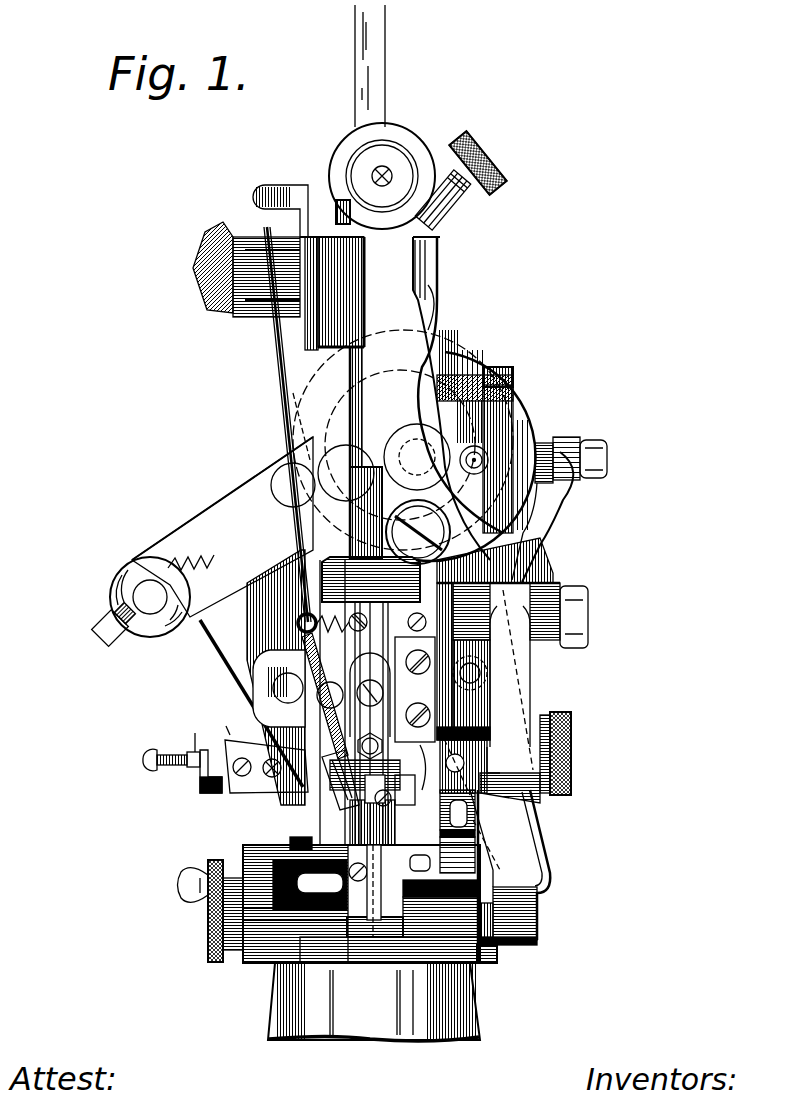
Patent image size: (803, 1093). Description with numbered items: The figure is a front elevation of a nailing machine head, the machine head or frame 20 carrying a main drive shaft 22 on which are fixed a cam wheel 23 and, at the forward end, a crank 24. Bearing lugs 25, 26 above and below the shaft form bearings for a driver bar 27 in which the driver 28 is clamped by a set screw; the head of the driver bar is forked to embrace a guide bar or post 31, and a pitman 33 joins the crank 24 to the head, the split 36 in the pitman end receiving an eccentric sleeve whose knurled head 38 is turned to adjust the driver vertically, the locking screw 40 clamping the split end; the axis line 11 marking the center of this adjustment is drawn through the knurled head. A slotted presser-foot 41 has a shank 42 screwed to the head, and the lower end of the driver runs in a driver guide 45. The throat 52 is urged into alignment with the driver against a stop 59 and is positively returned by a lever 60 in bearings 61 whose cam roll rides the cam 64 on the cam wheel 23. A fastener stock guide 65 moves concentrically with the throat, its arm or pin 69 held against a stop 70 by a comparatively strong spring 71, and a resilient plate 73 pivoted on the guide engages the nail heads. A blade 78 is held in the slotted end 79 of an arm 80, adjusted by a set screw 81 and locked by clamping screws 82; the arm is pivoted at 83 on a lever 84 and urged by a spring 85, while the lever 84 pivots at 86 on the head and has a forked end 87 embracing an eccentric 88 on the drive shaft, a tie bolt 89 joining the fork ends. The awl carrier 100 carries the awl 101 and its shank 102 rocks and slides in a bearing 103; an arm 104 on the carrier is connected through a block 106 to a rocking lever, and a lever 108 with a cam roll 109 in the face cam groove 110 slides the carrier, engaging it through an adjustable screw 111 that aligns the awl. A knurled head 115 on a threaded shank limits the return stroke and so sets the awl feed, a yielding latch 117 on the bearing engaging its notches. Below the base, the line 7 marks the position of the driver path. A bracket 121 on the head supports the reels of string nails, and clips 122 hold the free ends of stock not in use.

The needle 7 is at (372, 940).
The axis of hand wheel 11 is at (462, 252).
The machine head or frame 20 is at (437, 312).
The main drive shaft 22 is at (490, 440).
The cam wheel 23 is at (457, 352).
The crank 24 is at (553, 440).
The bearing lug 25 is at (428, 292).
The bearing lug 26 is at (517, 567).
The driver bar 27 is at (293, 503).
The driver 28 is at (440, 852).
The guide bar or post 31 is at (372, 77).
The pitman 33 is at (318, 373).
The split of pitman end 36 is at (448, 222).
The knurled head 38 is at (415, 137).
The locking screw 40 is at (500, 170).
The presser-foot 41 is at (275, 987).
The shank 42 is at (470, 797).
The driver guide 45 is at (400, 790).
The throat 52 is at (303, 920).
The stop 59 is at (473, 820).
The lever 60 is at (263, 632).
The bearings 61 is at (317, 697).
The cam 64 is at (522, 393).
The fastener stock guide 65 is at (305, 843).
The arm or pin 69 is at (273, 690).
The stop 70 is at (195, 733).
The spring 71 is at (298, 622).
The resilient plate 73 is at (360, 807).
The blade 78 is at (313, 793).
The slotted end 79 is at (247, 798).
The arm 80 is at (395, 665).
The set screw 81 is at (143, 760).
The clamping screws 82 is at (200, 775).
The pivot 83 is at (145, 597).
The lever 84 is at (222, 527).
The spring 85 is at (165, 560).
The pivot 86 is at (280, 470).
The forked end 87 is at (520, 392).
The eccentric 88 is at (500, 367).
The tie bolt 89 is at (537, 447).
The awl carrier 100 is at (480, 962).
The awl 101 is at (493, 917).
The shank 102 is at (445, 1043).
The bearing 103 is at (403, 940).
The arm 104 is at (473, 820).
The block 106 is at (572, 770).
The lever 108 is at (537, 860).
The cam roll 109 is at (560, 487).
The face cam groove 110 is at (395, 355).
The screw 111 is at (517, 943).
The knurled head 115 is at (208, 930).
The yielding latch 117 is at (187, 888).
The bracket 121 is at (212, 300).
The clips 122 is at (288, 176).